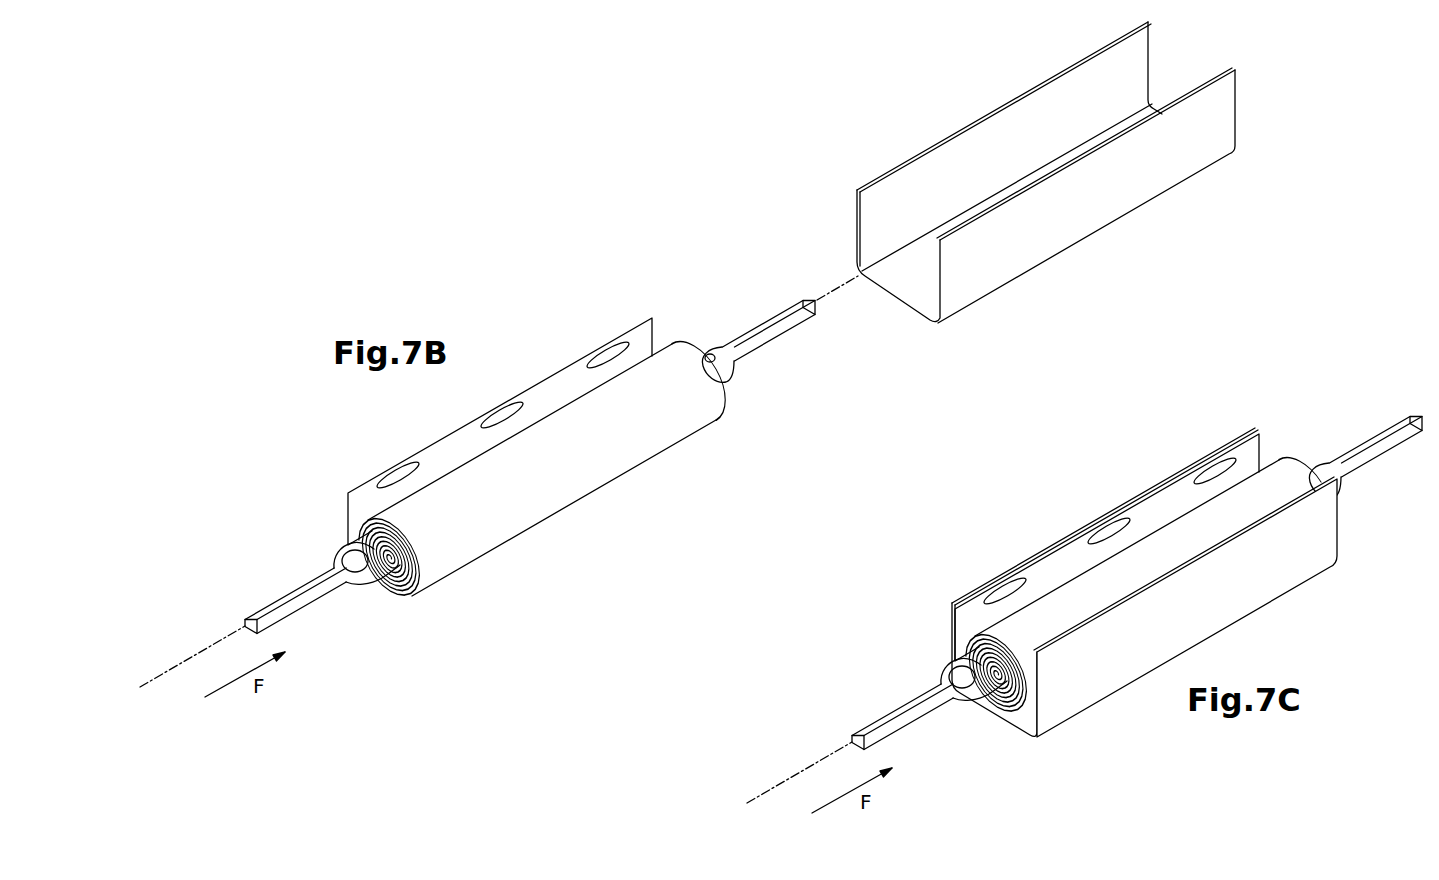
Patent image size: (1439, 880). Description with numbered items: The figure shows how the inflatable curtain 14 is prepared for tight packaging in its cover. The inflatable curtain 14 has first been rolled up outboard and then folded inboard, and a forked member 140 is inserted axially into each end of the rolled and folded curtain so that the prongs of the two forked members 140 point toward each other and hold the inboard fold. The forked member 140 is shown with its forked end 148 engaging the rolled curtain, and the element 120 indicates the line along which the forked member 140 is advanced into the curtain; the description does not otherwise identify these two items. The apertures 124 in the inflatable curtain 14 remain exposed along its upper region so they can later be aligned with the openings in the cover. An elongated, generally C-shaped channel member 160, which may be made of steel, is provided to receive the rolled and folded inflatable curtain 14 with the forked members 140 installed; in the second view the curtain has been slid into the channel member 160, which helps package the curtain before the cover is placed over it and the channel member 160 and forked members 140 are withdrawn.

In FIG. 7B, the inflatable curtain 14 is at (567, 478).
In FIG. 7C, the inflatable curtain 14 is at (1178, 543).
In FIG. 7B, the apertures 124 is at (610, 348).
In FIG. 7C, the apertures 124 is at (1212, 466).
In FIG. 7B, the forked member 140 is at (337, 563).
In FIG. 7C, the forked member 140 is at (944, 679).
In FIG. 7B, the forked lead end 148 is at (345, 542).
In FIG. 7C, the forked lead end 148 is at (952, 658).
In FIG. 7B, the longitudinal axis 120 is at (190, 660).
In FIG. 7C, the longitudinal axis 120 is at (797, 776).
In FIG. 7B, the channel member 160 is at (1075, 217).
In FIG. 7C, the channel member 160 is at (1232, 592).